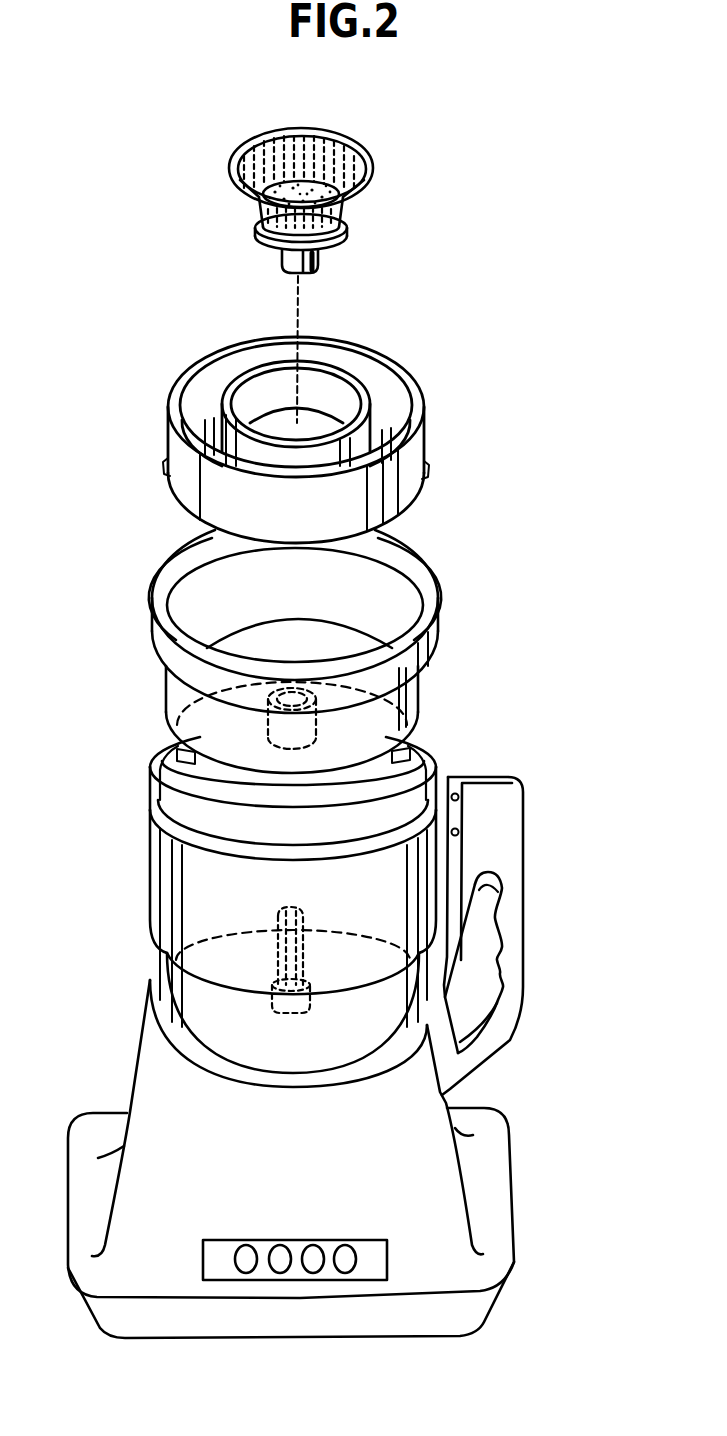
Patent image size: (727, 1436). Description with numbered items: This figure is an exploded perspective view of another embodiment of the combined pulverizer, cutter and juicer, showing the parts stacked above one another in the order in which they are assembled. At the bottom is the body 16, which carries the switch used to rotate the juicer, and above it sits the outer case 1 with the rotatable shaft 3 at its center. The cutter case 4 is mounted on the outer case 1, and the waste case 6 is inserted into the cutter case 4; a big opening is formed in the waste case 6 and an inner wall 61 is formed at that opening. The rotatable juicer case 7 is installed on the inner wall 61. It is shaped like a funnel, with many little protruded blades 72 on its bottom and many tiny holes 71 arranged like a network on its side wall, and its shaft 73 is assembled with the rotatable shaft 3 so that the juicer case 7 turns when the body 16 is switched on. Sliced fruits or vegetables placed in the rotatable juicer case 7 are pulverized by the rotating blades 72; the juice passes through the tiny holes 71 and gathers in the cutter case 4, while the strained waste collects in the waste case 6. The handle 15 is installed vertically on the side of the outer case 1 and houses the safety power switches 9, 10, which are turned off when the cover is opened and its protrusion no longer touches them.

The outer case 1 is at (252, 912).
The rotatable shaft 3 is at (167, 945).
The cutter case 4 is at (434, 626).
The waste case 6 is at (344, 415).
The inner wall 61 is at (347, 373).
The rotatable juicer case 7 is at (291, 169).
The tiny holes 71 is at (298, 144).
The protruded blades 72 is at (260, 204).
The shaft 73 is at (318, 259).
The safety power switch 9 is at (463, 780).
The safety power switch 10 is at (460, 832).
The handle 15 is at (528, 898).
The body 16 is at (313, 1242).